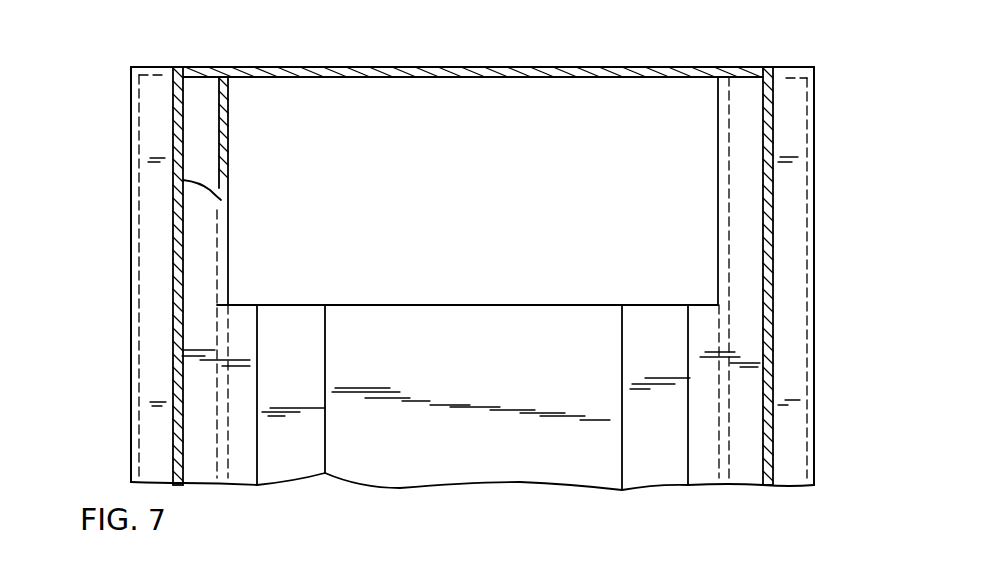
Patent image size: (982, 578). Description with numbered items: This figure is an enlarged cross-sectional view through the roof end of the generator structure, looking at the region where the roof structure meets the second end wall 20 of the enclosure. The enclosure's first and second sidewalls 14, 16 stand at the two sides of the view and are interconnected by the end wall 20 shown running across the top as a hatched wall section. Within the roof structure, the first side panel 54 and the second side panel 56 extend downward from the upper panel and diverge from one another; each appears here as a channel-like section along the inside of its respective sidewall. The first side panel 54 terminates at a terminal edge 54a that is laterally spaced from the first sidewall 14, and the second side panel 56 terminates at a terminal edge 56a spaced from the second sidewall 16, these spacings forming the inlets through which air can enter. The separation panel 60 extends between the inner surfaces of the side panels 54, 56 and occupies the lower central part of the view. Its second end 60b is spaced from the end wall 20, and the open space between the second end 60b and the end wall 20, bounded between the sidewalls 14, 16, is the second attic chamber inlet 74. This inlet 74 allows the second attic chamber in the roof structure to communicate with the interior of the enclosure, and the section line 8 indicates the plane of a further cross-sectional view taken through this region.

The section line 8- 8 is at (199, 62).
The first sidewall 14 is at (773, 137).
The second sidewall 16 is at (218, 148).
The second end wall 20 is at (353, 70).
The first side panel 54 is at (788, 312).
The terminal edge 54a is at (817, 232).
The second side panel 56 is at (150, 345).
The terminal edge 56a is at (128, 298).
The separation panel 60 is at (446, 362).
The second end 60b is at (468, 302).
The second attic chamber inlet 74 is at (422, 201).